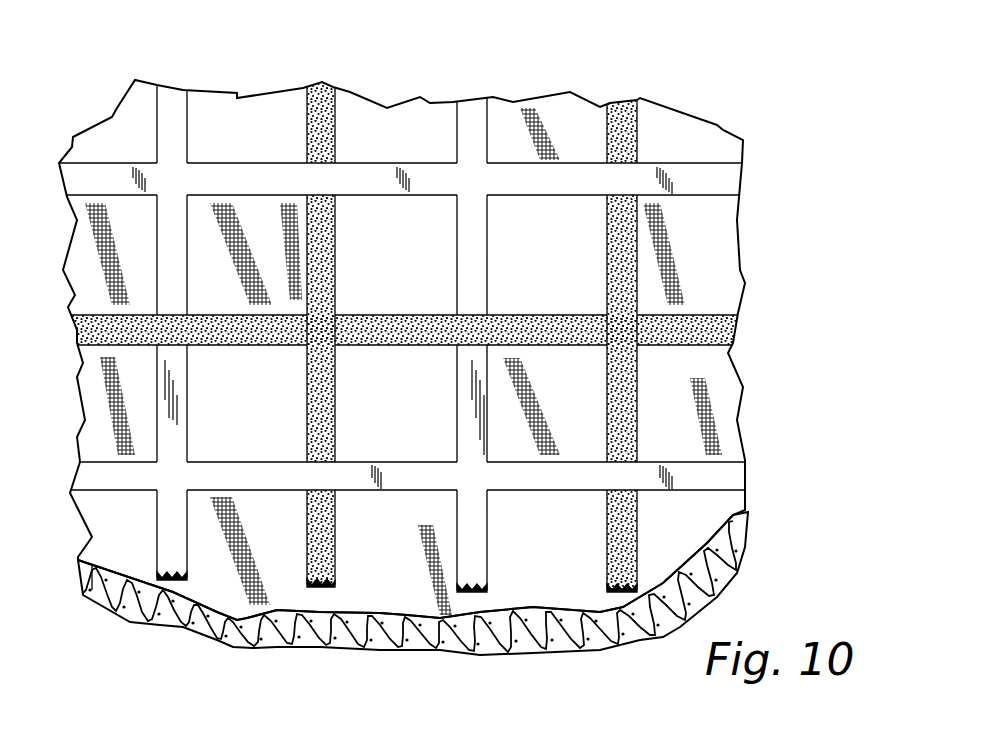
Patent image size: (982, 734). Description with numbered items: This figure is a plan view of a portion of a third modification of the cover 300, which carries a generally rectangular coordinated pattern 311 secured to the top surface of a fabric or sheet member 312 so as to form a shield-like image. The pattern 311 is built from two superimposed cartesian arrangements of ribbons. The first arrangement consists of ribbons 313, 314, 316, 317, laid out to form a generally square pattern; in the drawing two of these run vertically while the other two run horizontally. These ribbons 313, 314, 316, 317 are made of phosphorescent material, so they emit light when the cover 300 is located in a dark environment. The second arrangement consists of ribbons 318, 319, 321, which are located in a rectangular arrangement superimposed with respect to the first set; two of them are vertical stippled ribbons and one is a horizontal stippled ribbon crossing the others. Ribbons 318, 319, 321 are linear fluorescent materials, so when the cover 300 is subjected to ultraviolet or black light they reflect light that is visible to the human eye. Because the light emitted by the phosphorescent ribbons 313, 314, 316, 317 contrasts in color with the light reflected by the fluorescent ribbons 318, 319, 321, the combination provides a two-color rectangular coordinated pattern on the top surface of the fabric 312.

The cover 300 is at (703, 96).
The coordinated pattern 311 is at (708, 210).
The fabric or sheet member 312 is at (505, 640).
The ribbon 313 is at (173, 103).
The ribbon 314 is at (473, 120).
The ribbon 316 is at (722, 178).
The ribbon 317 is at (717, 473).
The ribbon 318 is at (325, 103).
The ribbon 319 is at (623, 120).
The ribbon 321 is at (735, 327).